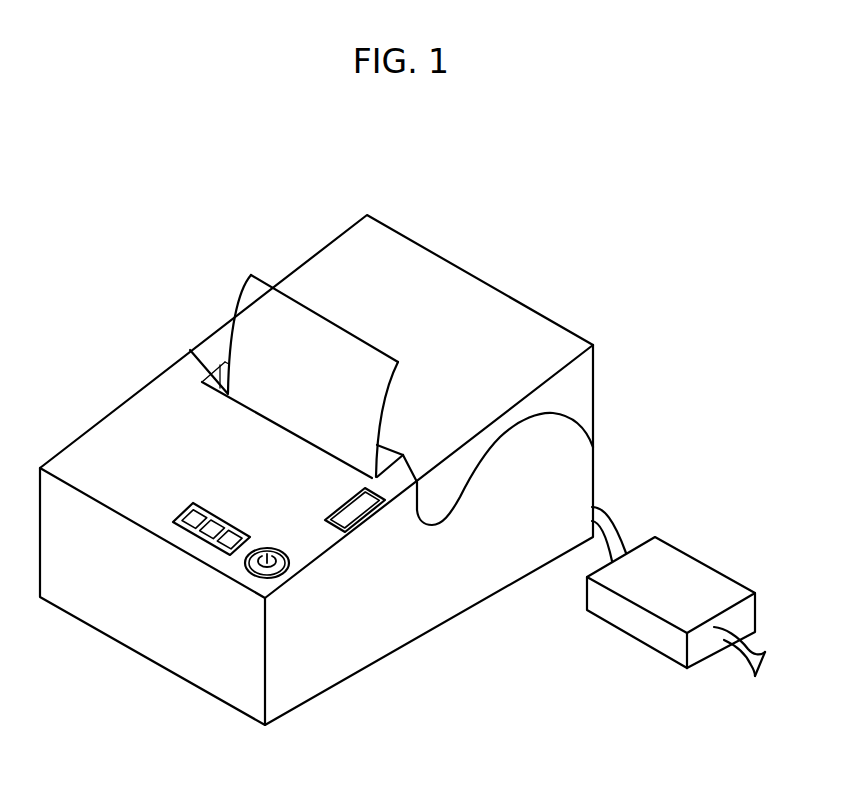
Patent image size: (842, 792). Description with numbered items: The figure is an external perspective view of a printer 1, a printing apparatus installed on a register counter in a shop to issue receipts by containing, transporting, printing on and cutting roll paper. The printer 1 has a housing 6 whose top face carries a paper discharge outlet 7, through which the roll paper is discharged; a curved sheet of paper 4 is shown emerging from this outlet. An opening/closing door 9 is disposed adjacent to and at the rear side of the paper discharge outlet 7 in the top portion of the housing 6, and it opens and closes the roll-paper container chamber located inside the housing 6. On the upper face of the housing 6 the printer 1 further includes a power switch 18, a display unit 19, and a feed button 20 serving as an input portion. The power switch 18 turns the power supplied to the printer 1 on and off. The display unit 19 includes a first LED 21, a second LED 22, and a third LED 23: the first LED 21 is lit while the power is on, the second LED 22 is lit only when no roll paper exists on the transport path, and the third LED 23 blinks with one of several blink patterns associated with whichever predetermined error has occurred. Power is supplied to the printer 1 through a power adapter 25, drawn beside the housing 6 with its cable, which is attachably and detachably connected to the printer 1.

The printer 1 is at (145, 186).
The recording paper 4 is at (311, 328).
The housing 6 is at (157, 442).
The paper discharge outlet 7 is at (383, 460).
The opening/closing door 9 is at (424, 285).
The power switch 18 is at (288, 562).
The display unit 19 is at (167, 523).
The feed button 20 is at (357, 510).
The first LED 21 is at (220, 545).
The second LED 22 is at (202, 536).
The third LED 23 is at (184, 525).
The power adapter 25 is at (687, 570).